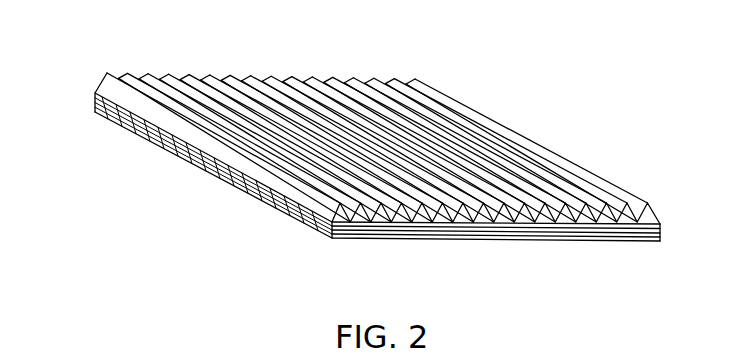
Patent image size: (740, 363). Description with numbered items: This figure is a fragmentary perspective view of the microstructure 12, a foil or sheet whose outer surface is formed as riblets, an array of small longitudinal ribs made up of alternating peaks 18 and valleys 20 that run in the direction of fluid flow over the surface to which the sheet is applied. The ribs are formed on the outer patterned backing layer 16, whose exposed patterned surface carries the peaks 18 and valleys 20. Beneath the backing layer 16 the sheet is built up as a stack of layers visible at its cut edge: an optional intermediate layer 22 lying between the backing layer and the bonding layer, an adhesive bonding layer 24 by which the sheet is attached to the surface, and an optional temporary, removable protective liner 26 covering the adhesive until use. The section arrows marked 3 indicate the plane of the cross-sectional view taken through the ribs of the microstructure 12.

The microstructure 12 is at (412, 153).
The peaks 18 is at (431, 84).
The valleys 20 is at (638, 211).
The backing layer 16 is at (652, 218).
The intermediate layer 22 is at (661, 230).
The adhesive bonding layer 24 is at (625, 234).
The protective liner 26 is at (529, 238).
The section line 3- 3 is at (131, 134).